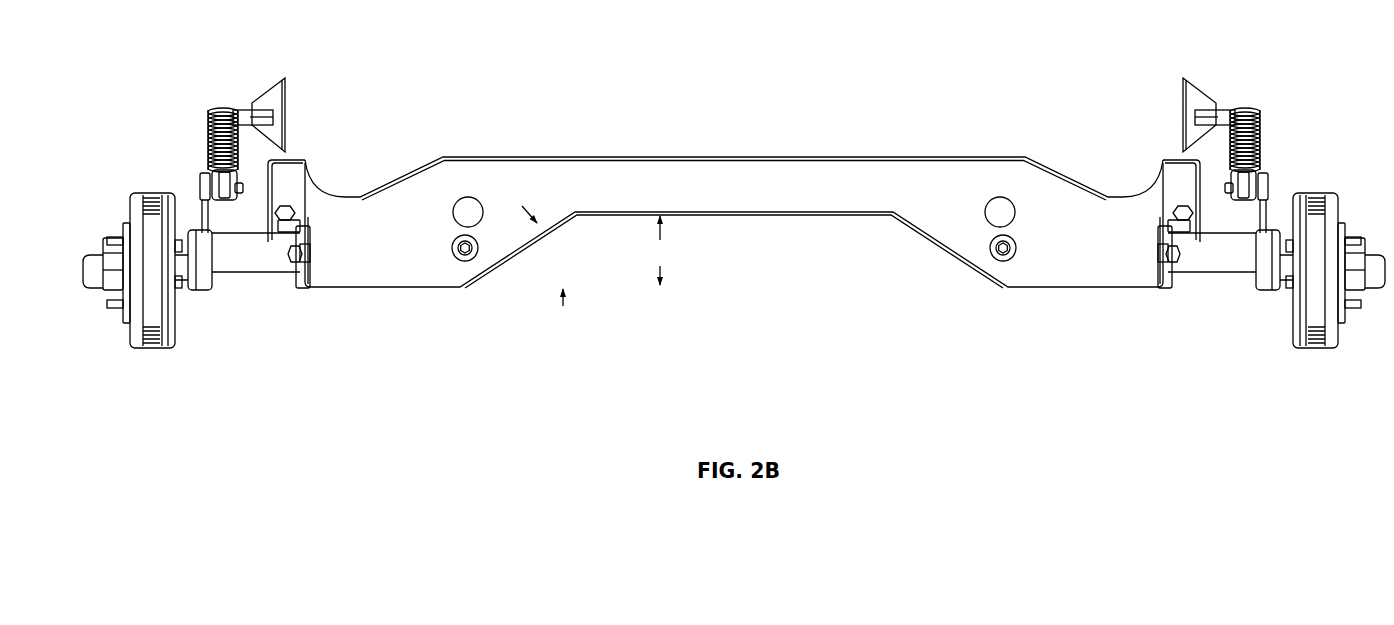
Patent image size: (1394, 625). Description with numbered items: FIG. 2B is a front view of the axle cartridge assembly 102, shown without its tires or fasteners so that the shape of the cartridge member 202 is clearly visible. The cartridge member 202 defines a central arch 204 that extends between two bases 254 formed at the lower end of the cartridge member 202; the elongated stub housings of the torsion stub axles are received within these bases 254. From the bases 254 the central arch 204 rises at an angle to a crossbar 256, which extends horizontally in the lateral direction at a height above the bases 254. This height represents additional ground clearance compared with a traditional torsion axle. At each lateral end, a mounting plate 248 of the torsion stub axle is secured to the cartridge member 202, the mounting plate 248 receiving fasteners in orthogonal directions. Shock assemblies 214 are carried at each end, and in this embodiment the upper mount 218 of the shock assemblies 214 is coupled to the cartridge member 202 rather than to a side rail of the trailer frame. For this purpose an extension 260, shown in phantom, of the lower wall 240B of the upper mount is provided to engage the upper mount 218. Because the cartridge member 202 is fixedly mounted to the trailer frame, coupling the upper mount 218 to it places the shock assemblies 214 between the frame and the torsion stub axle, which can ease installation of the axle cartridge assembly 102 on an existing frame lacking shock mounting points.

The axle cartridge assembly 102 is at (734, 214).
The cartridge member 202 is at (734, 168).
The central arch 204 is at (795, 222).
The shock assemblies 214 is at (1265, 114).
The upper mount 218 is at (1199, 100).
The lower wall 240B is at (1176, 178).
The mounting plate 248 is at (298, 265).
The bases 254 is at (363, 255).
The crossbar 256 is at (723, 177).
The extension 260 is at (1262, 163).